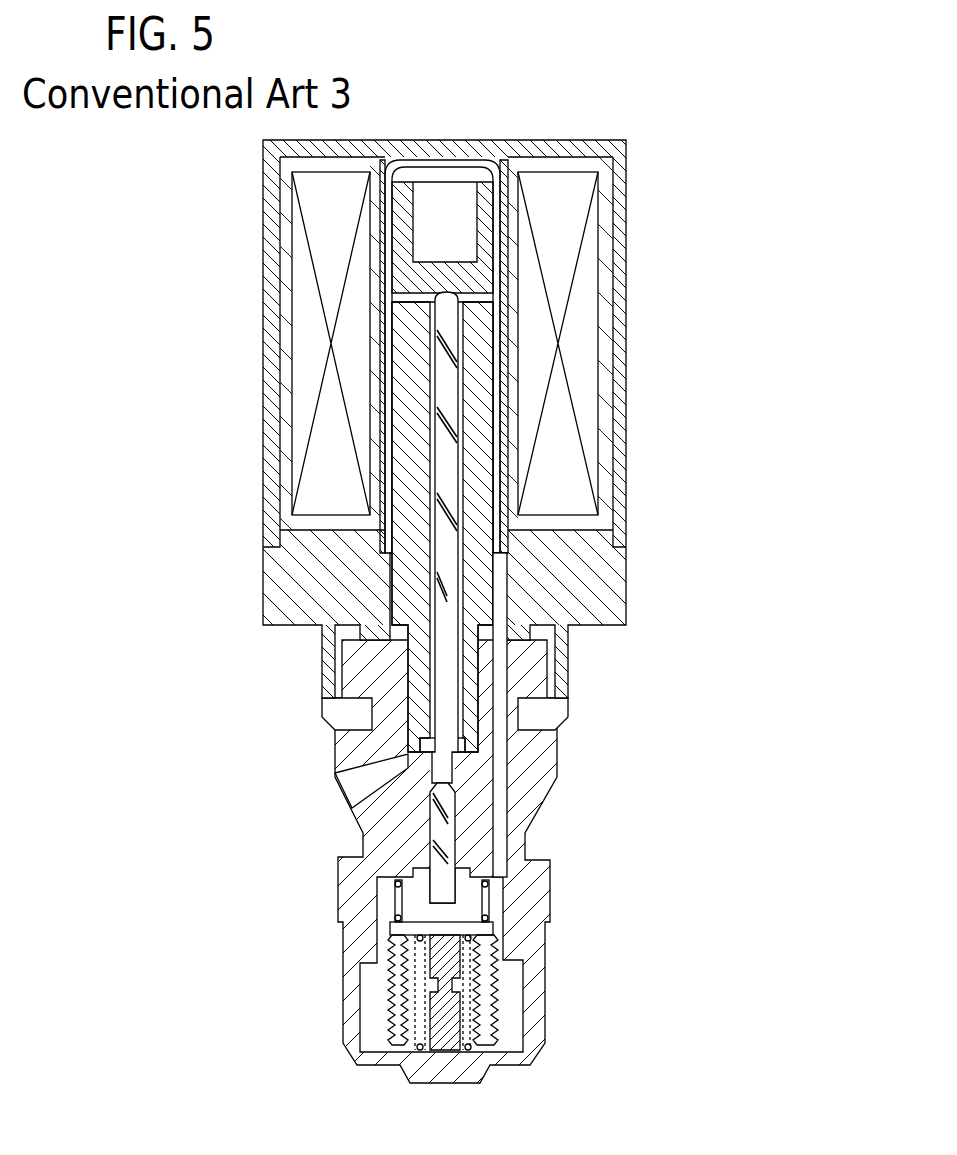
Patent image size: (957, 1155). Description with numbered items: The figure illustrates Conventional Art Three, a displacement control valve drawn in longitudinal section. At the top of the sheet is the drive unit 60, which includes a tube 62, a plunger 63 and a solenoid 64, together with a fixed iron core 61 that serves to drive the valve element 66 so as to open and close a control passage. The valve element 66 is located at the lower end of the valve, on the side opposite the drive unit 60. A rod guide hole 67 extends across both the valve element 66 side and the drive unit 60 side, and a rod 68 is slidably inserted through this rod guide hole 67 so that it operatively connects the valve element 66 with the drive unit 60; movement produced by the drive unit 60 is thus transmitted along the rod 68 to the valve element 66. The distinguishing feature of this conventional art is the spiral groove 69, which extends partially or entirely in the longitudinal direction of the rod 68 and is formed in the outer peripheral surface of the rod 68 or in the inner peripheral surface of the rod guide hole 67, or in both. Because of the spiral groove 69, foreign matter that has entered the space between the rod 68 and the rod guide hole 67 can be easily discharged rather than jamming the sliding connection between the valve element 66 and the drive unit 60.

The drive unit 60 is at (752, 378).
The fixed iron core 61 is at (488, 375).
The tube 62 is at (498, 188).
The plunger 63 is at (498, 275).
The solenoid 64 is at (587, 322).
The valve element 66 is at (460, 730).
The rod guide hole 67 is at (520, 505).
The rod 68 is at (447, 564).
The spiral groove 69 is at (440, 432).